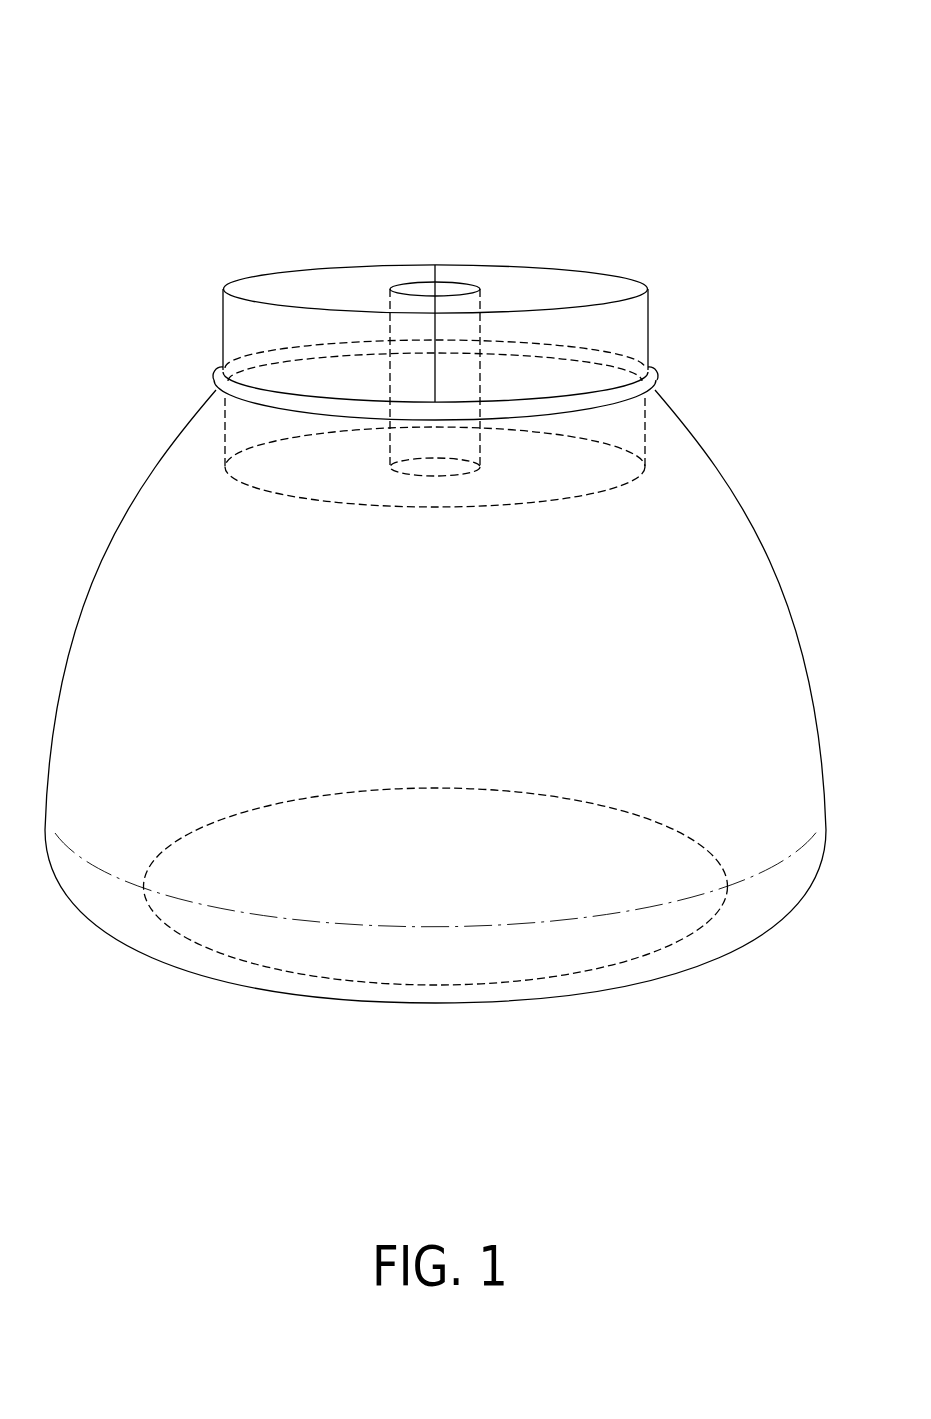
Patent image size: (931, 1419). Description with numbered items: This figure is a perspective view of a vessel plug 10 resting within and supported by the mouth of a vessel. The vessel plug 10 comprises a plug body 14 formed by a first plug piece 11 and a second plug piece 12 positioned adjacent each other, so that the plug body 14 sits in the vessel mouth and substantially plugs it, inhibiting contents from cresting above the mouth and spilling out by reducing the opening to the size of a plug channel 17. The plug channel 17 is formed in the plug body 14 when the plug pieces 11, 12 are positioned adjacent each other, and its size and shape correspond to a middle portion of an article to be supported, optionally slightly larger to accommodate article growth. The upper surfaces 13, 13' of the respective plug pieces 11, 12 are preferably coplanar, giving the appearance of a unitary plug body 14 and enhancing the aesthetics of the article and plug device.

The vessel plug 10 is at (731, 88).
The first plug piece 11 is at (235, 332).
The second plug piece 12 is at (635, 335).
The upper surface 13 is at (274, 239).
The upper surface 13' is at (611, 242).
The plug body 14 is at (368, 252).
The plug channel 17 is at (466, 272).